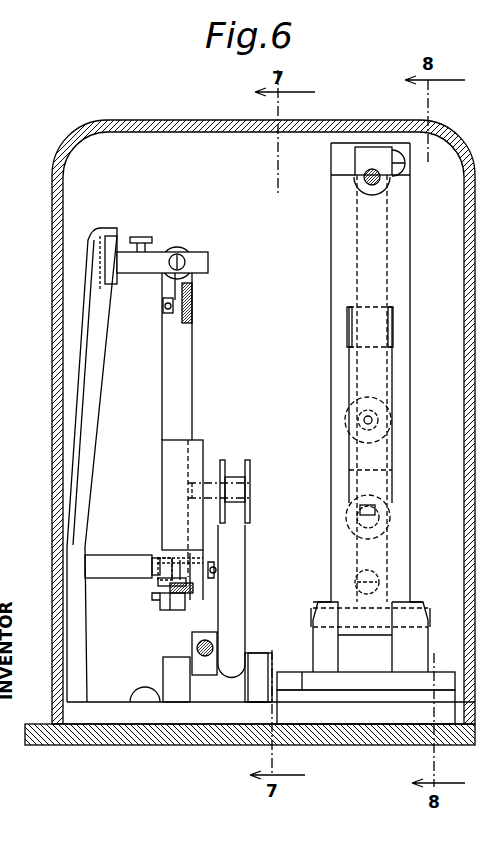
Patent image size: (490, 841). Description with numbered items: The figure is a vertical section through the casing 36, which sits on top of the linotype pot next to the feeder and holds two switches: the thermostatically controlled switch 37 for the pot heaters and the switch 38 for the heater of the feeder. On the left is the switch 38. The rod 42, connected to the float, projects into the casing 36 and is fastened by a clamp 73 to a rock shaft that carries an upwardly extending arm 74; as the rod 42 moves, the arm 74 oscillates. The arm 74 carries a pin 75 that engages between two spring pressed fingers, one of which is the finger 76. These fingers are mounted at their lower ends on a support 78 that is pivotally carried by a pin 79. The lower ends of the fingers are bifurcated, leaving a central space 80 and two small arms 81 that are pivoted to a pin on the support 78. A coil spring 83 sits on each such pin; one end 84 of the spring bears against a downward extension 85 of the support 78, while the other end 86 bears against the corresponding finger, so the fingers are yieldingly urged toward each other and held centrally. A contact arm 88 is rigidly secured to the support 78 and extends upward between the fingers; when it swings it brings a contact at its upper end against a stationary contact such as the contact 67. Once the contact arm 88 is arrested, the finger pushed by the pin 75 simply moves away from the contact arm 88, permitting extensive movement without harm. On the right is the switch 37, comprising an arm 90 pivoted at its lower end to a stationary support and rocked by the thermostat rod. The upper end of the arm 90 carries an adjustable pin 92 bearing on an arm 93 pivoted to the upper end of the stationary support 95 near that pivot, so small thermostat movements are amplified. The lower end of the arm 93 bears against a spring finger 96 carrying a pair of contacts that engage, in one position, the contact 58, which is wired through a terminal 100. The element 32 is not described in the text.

The screw 32 is at (174, 613).
The casing 36 is at (52, 212).
The thermostatically controlled switch 37 is at (435, 338).
The switch 38 is at (104, 465).
The rod 42 is at (197, 648).
The contact 58 is at (378, 520).
The contact 67 is at (181, 248).
The clamp 73 is at (197, 662).
The arm 74 is at (237, 577).
The pin 75 is at (222, 475).
The spring pressed finger 76 is at (196, 449).
The support 78 is at (215, 565).
The pin 79 is at (155, 557).
The central space 80 is at (177, 560).
The small arms 81 is at (203, 575).
The coil spring 83 is at (188, 560).
The spring end 84 is at (178, 598).
The downward extension 85 is at (160, 610).
The spring end 86 is at (190, 553).
The contact arm 88 is at (178, 363).
The arm 90 is at (372, 267).
The adjustable pin 92 is at (378, 181).
The arm 93 is at (382, 387).
The stationary support 95 is at (398, 287).
The spring finger 96 is at (380, 485).
The terminal 100 is at (372, 567).